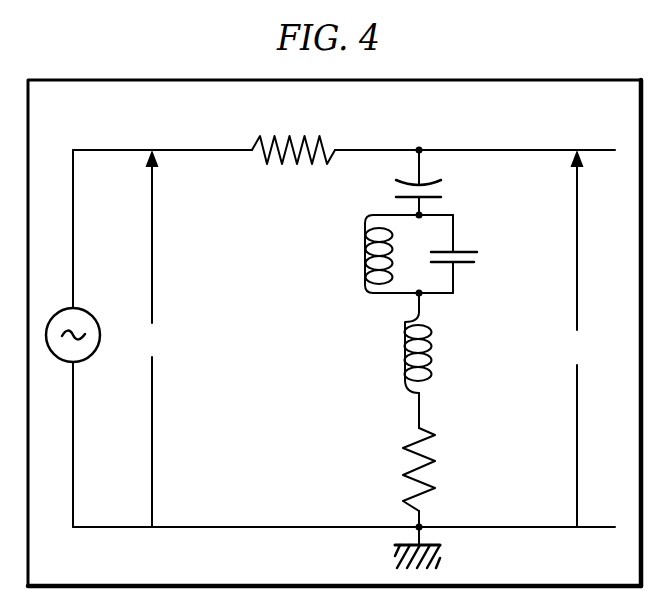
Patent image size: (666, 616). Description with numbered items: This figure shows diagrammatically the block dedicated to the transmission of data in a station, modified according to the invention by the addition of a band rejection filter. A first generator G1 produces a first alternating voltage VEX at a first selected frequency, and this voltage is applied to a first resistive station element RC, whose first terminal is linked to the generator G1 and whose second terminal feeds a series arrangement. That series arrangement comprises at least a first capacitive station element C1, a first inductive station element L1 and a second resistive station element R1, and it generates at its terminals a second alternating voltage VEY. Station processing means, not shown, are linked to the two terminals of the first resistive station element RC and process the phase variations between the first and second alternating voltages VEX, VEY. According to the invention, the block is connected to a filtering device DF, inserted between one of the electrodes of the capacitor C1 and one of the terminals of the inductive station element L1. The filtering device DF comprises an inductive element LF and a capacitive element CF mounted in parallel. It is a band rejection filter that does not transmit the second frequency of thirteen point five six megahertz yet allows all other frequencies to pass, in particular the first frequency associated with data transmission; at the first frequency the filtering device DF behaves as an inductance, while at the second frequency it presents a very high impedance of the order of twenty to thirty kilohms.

The first generator G1 is at (116, 296).
The first resistive station element RC is at (289, 135).
The first alternating voltage VEX is at (152, 338).
The second alternating voltage VEY is at (577, 338).
The first capacitive station element C1 is at (395, 187).
The filtering device DF is at (420, 245).
The inductive element LF is at (365, 255).
The capacitive element CF is at (478, 257).
The first inductive station element L1 is at (405, 352).
The second resistive station element R1 is at (401, 472).